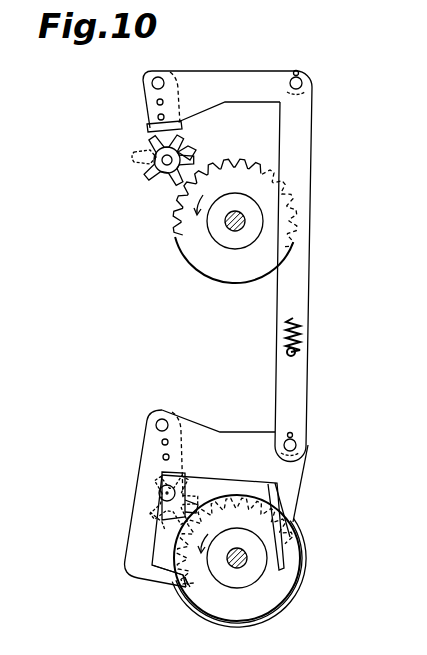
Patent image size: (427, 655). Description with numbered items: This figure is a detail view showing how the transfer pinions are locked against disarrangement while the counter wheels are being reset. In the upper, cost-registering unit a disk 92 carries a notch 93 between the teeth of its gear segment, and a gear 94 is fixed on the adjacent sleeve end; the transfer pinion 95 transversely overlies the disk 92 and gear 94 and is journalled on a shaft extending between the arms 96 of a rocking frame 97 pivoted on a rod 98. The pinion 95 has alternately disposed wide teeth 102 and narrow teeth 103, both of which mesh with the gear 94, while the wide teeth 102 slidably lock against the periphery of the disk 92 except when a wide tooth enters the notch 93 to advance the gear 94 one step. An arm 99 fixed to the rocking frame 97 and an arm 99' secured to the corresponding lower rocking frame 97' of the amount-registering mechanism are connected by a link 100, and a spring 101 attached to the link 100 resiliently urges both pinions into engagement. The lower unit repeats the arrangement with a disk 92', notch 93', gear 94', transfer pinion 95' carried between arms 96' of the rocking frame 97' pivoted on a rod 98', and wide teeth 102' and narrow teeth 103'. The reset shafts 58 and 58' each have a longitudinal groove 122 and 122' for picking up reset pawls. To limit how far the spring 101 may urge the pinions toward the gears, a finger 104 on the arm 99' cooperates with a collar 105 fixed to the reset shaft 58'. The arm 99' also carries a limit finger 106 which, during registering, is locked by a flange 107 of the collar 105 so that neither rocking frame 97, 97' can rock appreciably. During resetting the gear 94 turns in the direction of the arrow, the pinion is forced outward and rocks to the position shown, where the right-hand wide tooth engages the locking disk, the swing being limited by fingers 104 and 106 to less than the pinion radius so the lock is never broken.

The reset shaft 58 is at (235, 231).
The disk 92 is at (219, 239).
The notch 93 is at (258, 190).
The gear 94 is at (180, 200).
The transfer pinion 95 is at (157, 170).
The arms 96 is at (147, 128).
The rocking frame 97 is at (145, 99).
The rod 98 is at (170, 67).
The arm 99 is at (232, 96).
The link 100 is at (304, 270).
The spring 101 is at (294, 320).
The wide teeth 102 is at (166, 160).
The narrow teeth 103 is at (131, 151).
The groove 122 is at (243, 206).
The reset shaft 58' is at (231, 564).
The disk 92' is at (235, 563).
The notch 93' is at (235, 521).
The gear 94' is at (218, 516).
The transfer pinion 95' is at (150, 507).
The arms 96' is at (182, 487).
The rocking frame 97' is at (145, 498).
The rod 98' is at (166, 407).
The arm 99' is at (218, 415).
The wide teeth 102' is at (190, 497).
The narrow teeth 103' is at (130, 537).
The finger 104 is at (143, 573).
The collar 105 is at (259, 574).
The limit finger 106 is at (293, 507).
The flange 107 is at (292, 557).
The groove 122' is at (247, 543).